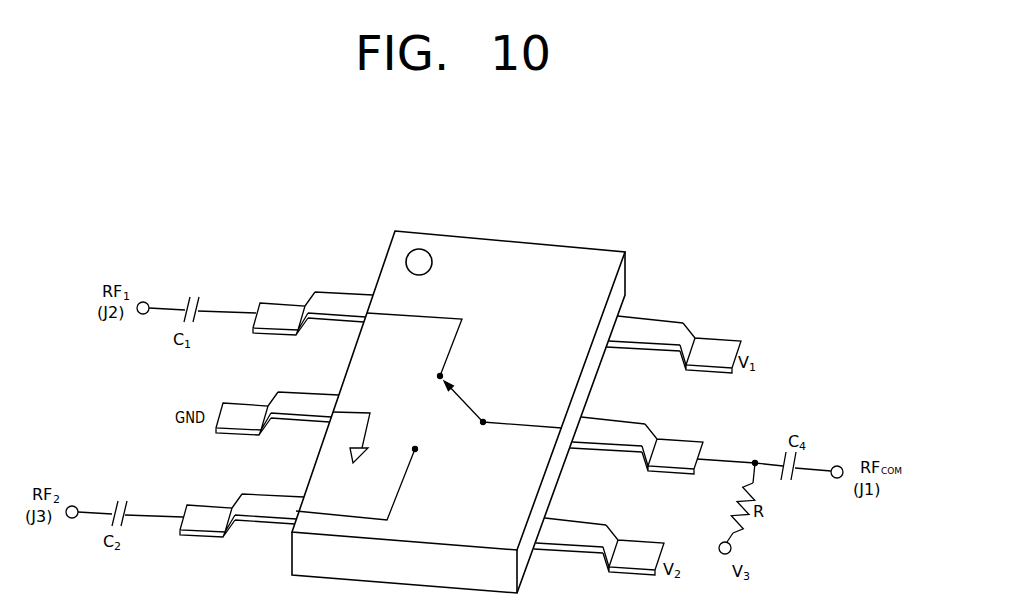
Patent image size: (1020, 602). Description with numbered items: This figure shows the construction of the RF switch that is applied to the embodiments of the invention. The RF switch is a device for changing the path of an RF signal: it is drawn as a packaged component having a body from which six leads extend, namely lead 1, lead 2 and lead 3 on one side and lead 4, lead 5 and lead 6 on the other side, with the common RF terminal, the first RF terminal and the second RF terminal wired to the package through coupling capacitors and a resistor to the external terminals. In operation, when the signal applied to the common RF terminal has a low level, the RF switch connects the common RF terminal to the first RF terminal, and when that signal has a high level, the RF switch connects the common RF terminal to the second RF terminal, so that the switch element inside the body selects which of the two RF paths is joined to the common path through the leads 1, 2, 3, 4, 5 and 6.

The first RF input pin (RF1/J2) 1 is at (313, 313).
The ground pin (GND) 2 is at (277, 413).
The second RF input pin (RF2/J3) 3 is at (242, 515).
The control voltage pin V2 4 is at (599, 546).
The RF common output pin (RFcom/J1) 5 is at (636, 445).
The control voltage pin V1 6 is at (673, 344).